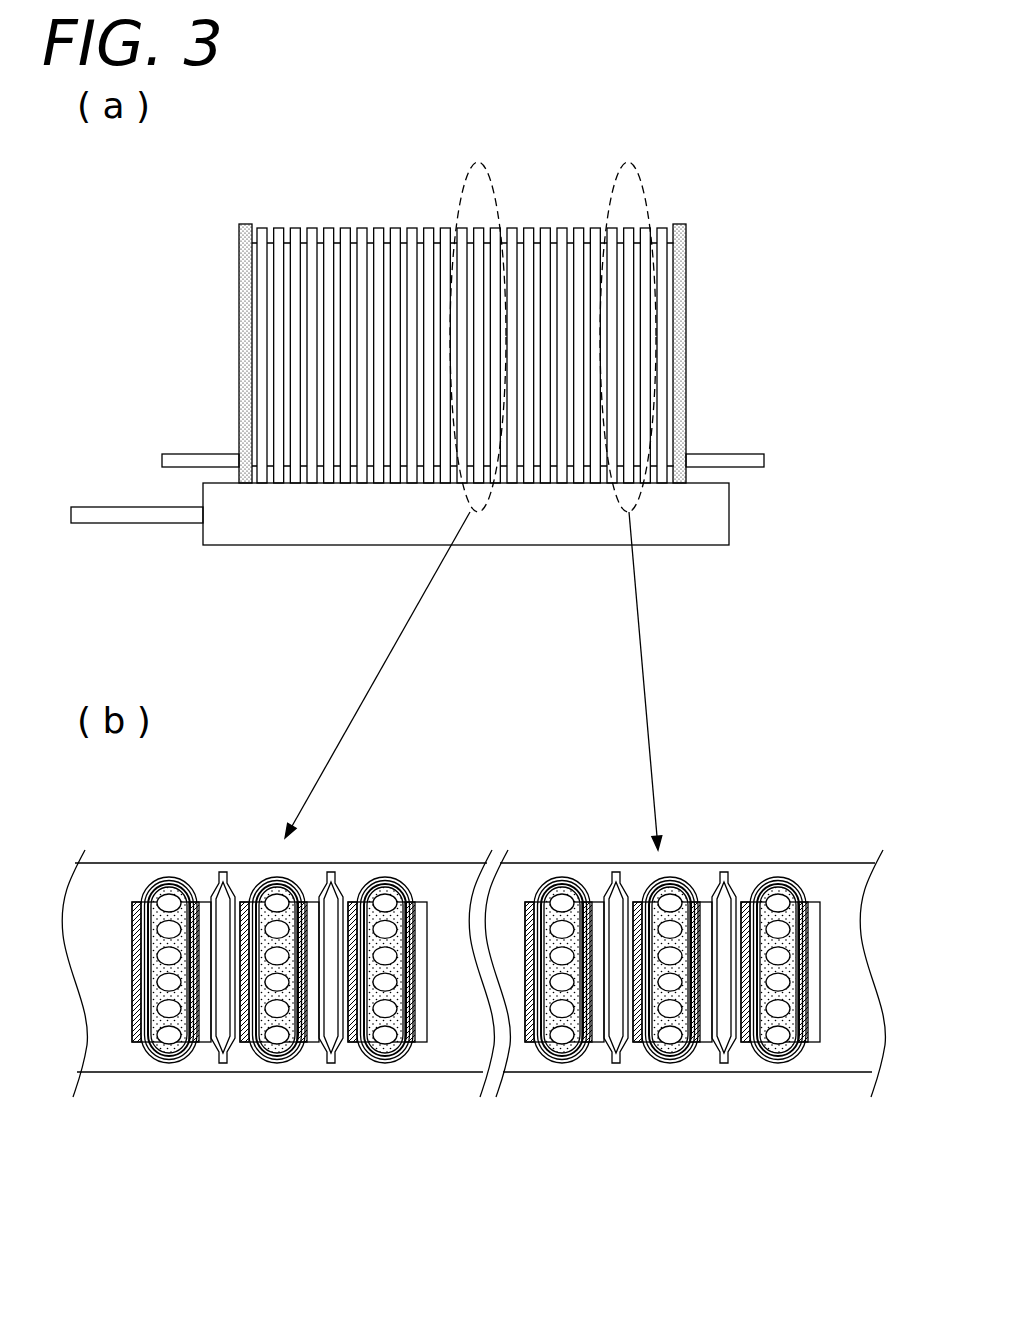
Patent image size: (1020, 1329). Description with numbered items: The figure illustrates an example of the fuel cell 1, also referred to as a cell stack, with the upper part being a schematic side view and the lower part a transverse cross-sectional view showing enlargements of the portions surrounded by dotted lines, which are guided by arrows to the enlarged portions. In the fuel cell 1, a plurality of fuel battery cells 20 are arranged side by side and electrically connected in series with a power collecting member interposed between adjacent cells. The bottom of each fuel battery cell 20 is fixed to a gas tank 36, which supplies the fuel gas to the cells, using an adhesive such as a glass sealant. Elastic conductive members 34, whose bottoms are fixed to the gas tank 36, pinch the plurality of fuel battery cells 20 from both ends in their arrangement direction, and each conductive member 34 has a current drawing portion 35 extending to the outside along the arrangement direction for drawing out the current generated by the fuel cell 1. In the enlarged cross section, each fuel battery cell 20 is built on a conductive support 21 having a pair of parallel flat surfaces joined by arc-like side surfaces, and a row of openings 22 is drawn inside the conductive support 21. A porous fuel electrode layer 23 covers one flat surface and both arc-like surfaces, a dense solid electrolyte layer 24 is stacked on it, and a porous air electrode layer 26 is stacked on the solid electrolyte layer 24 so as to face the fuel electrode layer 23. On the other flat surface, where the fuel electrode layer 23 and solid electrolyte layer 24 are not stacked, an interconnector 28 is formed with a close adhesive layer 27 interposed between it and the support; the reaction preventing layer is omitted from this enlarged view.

The fuel cell 1 is at (469, 315).
The fuel battery cell 20 is at (542, 235).
The conductive support 21 is at (755, 1060).
The refrigerant passage 22 is at (763, 1037).
The fuel electrode layer 23 is at (791, 1053).
The solid electrolyte layer 24 is at (783, 1055).
The air electrode layer 26 is at (744, 940).
The close adhesive layer 27 is at (800, 897).
The interconnector 28 is at (809, 900).
The conductive member 34 is at (238, 307).
The current drawing portion 35 is at (178, 456).
The gas tank 36 is at (730, 523).